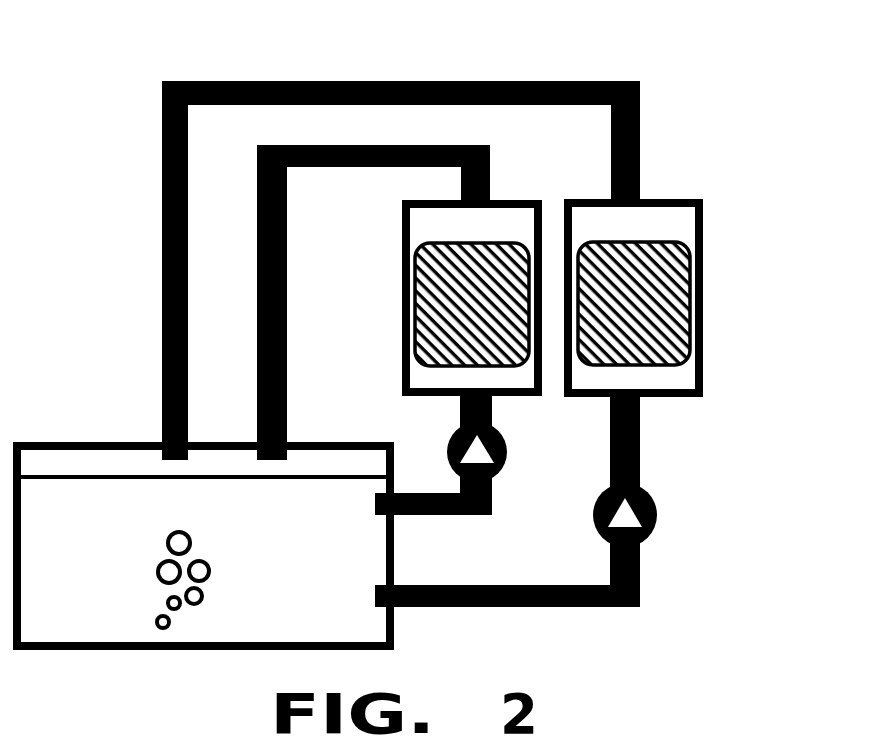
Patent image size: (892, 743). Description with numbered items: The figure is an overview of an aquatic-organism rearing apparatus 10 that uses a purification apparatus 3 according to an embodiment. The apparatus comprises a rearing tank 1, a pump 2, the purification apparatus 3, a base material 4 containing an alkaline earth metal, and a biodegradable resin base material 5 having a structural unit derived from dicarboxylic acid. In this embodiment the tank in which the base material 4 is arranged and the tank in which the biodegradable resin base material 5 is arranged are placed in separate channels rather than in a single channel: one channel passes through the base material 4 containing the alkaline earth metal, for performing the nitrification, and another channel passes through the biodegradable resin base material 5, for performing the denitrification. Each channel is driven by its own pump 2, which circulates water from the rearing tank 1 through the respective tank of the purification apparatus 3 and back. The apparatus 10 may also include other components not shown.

The aquatic-organism rearing apparatus 10 is at (87, 68).
The rearing tank 1 is at (105, 442).
The pump 2 is at (445, 452).
The purification apparatus 3 is at (407, 193).
The base material containing an alkaline earth metal 4 is at (418, 348).
The biodegradable resin base material 5 is at (703, 310).